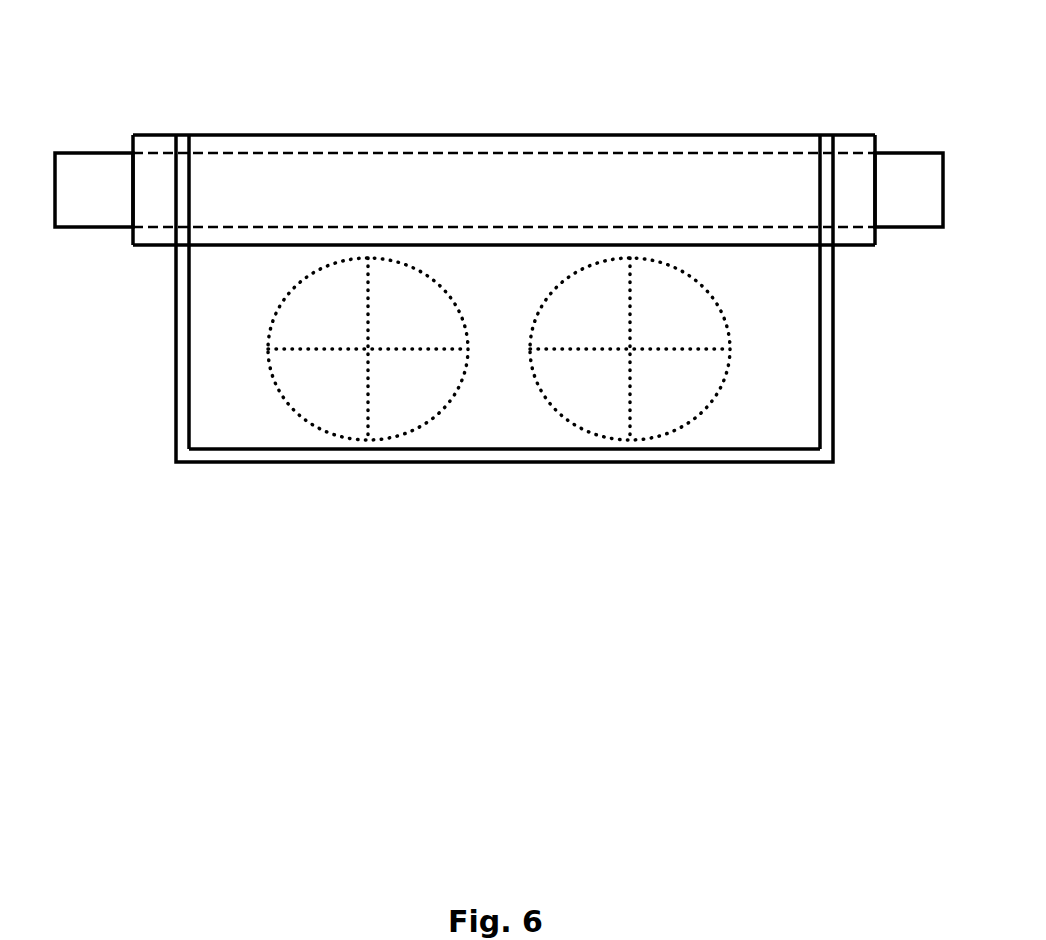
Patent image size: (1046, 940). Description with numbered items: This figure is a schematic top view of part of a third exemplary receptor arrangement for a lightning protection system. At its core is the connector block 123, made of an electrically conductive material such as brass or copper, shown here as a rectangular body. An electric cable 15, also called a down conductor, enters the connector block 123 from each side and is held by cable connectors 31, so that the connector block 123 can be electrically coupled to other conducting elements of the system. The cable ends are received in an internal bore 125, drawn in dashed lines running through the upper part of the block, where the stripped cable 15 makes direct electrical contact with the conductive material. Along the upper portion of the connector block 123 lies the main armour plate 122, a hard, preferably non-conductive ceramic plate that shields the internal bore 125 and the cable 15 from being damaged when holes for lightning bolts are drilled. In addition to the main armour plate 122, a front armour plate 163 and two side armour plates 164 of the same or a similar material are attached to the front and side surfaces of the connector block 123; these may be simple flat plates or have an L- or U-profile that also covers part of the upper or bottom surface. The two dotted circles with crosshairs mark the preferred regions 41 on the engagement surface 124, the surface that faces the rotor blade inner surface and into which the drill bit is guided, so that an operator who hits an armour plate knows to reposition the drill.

The electric cable 15 is at (95, 227).
The cable connector 31 is at (153, 135).
The preferred region 41 is at (347, 392).
The armour plate 122 is at (499, 135).
The connector block 123 is at (501, 323).
The engagement surface 124 is at (503, 464).
The internal bore 125 is at (658, 227).
The front armour plate 163 is at (405, 465).
The side armour plate 164 is at (173, 420).